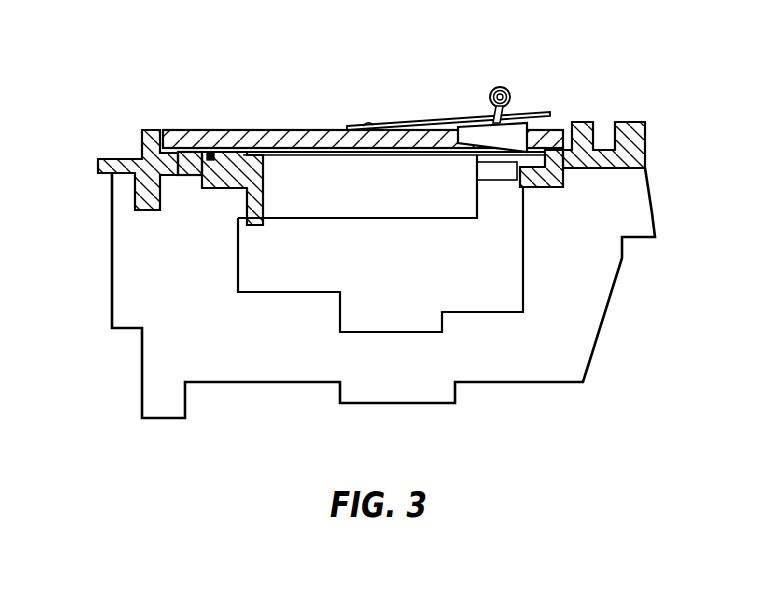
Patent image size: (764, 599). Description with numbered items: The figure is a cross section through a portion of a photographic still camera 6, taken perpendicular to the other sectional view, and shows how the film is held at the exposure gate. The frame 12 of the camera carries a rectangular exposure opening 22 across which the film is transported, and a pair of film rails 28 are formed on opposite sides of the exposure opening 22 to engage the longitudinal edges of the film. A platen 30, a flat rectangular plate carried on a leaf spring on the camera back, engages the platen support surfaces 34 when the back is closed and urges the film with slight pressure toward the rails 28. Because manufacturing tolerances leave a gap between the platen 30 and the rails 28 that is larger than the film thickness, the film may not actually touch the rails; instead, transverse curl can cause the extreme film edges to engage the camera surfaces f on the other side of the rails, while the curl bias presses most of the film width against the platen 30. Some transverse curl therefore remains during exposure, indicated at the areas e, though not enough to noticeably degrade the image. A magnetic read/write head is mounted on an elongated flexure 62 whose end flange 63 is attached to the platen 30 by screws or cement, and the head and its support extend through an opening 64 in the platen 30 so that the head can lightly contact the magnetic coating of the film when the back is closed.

The photographic still camera 6 is at (640, 262).
The frame 12 is at (107, 173).
The rectangular exposure opening 22 is at (263, 188).
The film rails 28 is at (263, 160).
The platen 30 is at (302, 130).
The platen support surfaces 34 is at (180, 170).
The flexure 62 is at (453, 106).
The end flange 63 is at (347, 126).
The opening 64 is at (442, 130).
The camera surfaces f is at (211, 152).
The areas of transverse curl e is at (240, 152).